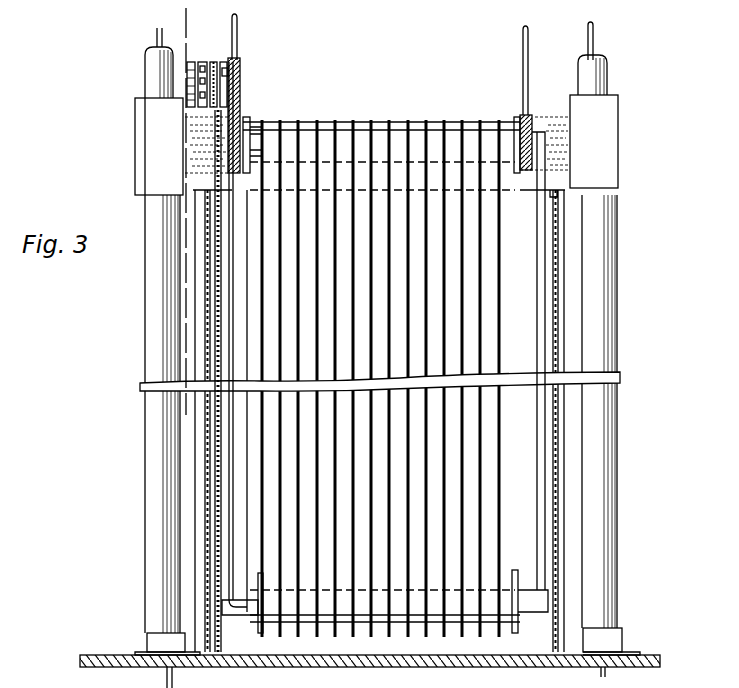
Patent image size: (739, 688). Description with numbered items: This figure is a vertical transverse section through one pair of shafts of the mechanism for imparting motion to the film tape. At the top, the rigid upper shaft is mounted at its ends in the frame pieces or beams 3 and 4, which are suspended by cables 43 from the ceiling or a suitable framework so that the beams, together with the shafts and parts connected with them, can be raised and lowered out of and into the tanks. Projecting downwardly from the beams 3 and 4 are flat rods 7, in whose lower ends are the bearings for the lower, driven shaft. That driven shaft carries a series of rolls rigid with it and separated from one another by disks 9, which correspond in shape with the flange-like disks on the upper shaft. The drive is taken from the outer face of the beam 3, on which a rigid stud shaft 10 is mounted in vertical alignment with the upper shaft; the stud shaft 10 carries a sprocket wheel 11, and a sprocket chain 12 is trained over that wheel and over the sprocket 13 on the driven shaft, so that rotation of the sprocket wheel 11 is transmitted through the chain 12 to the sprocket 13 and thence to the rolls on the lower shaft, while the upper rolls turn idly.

The frame piece 3 is at (240, 112).
The frame piece 4 is at (530, 125).
The flat rod 7 is at (545, 562).
The disk 9 is at (186, 20).
The stud shaft 10 is at (222, 62).
The sprocket wheel 11 is at (202, 62).
The sprocket chain 12 is at (220, 463).
The sprocket 13 is at (222, 625).
The cable 43 is at (523, 72).